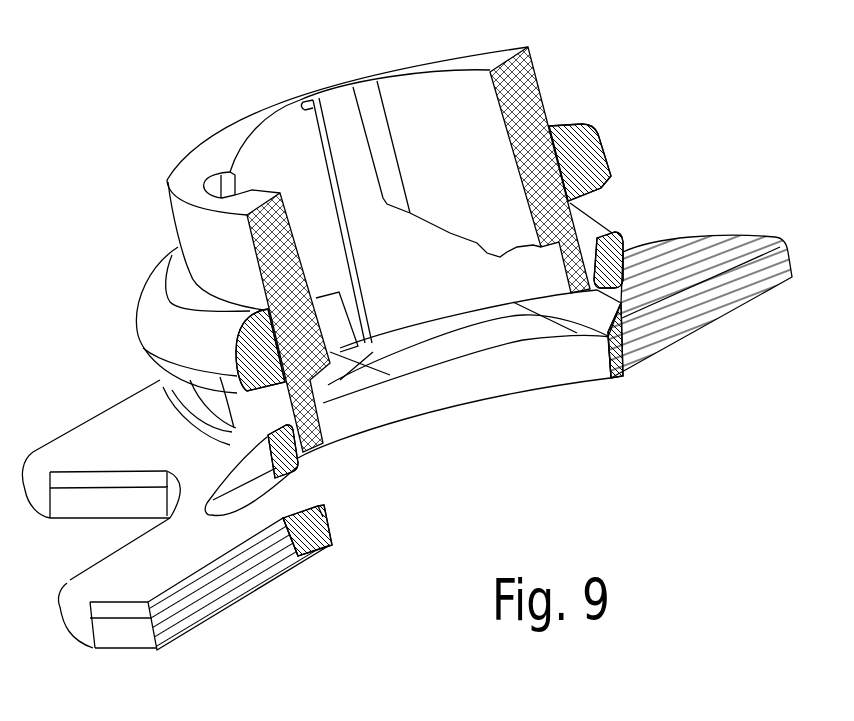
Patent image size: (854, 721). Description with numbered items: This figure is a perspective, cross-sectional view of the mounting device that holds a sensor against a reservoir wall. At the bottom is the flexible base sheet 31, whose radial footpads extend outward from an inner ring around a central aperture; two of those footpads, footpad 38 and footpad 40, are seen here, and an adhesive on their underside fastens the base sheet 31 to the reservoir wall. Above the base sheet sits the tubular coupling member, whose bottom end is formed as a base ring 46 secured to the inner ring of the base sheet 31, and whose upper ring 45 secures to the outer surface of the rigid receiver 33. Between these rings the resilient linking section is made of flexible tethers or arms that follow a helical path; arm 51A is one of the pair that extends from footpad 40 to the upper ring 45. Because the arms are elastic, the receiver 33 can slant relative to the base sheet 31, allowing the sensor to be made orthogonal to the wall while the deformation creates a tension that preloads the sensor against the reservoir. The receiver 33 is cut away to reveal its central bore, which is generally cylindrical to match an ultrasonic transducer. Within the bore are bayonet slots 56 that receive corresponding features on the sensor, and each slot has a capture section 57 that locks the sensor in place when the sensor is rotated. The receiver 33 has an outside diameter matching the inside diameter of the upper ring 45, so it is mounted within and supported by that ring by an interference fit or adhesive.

The base sheet 31 is at (93, 664).
The rigid receiver 33 is at (482, 56).
The footpad 38 is at (688, 320).
The footpad 40 is at (220, 596).
The upper ring 45 is at (598, 141).
The base ring 46 is at (318, 517).
The arm 51A is at (297, 466).
The bayonet slot 56 is at (340, 103).
The capture section 57 is at (513, 250).